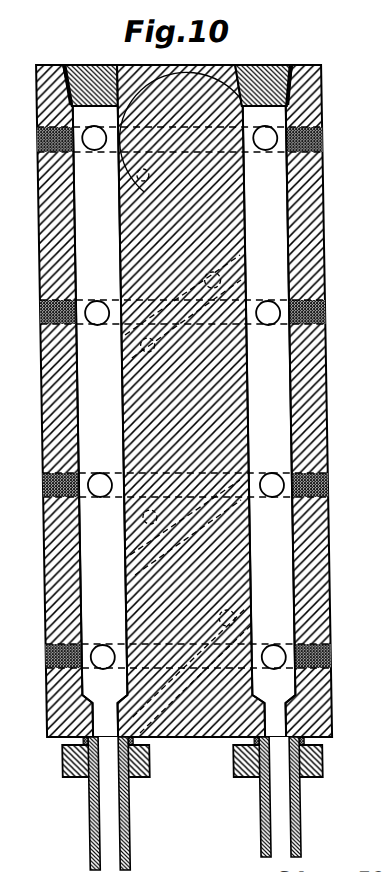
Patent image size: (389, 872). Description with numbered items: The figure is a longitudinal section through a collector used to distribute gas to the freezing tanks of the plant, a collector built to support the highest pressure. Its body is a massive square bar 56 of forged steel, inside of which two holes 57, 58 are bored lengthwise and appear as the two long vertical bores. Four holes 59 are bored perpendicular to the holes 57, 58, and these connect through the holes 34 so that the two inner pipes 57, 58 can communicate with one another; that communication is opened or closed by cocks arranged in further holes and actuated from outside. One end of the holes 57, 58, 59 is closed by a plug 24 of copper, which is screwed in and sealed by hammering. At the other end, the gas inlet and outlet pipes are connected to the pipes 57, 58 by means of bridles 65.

The plug 24 is at (87, 72).
The holes 34 is at (92, 138).
The massive square bar 56 is at (230, 216).
The hole 57 is at (271, 410).
The hole 58 is at (100, 421).
The holes 59 is at (246, 143).
The bridles 65 is at (220, 760).